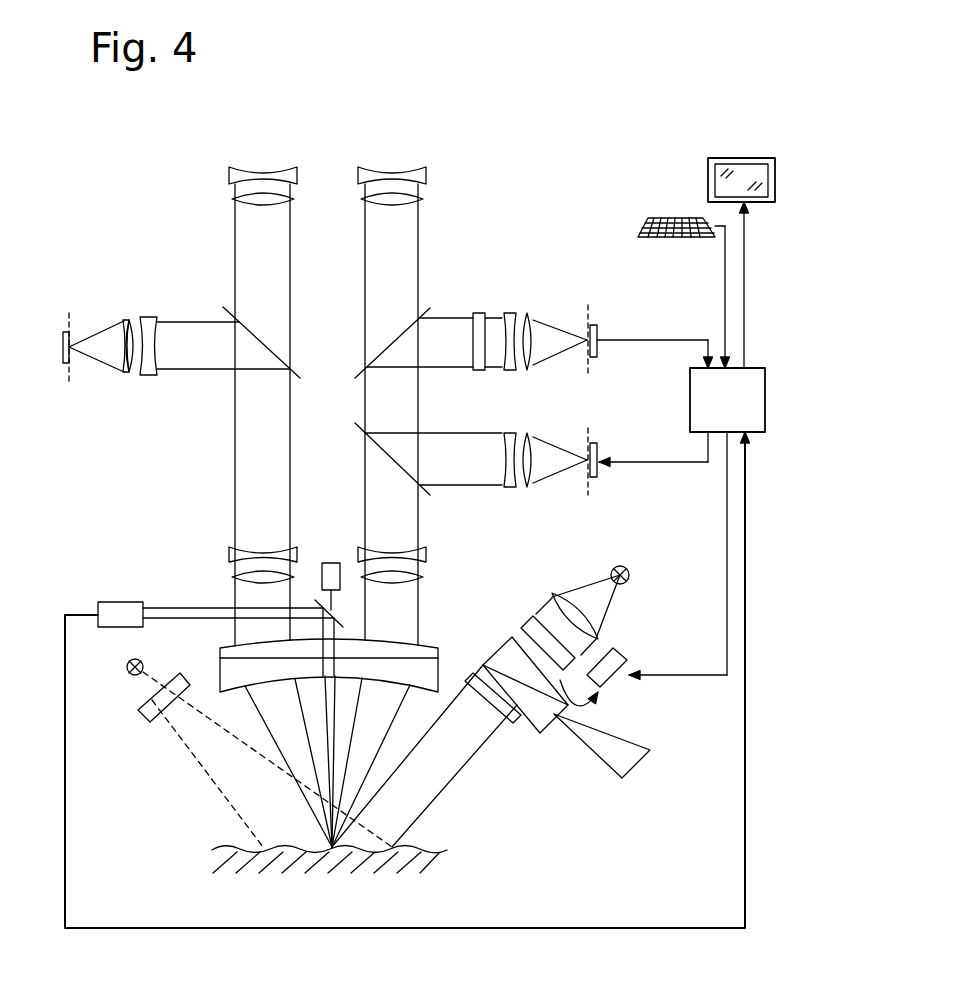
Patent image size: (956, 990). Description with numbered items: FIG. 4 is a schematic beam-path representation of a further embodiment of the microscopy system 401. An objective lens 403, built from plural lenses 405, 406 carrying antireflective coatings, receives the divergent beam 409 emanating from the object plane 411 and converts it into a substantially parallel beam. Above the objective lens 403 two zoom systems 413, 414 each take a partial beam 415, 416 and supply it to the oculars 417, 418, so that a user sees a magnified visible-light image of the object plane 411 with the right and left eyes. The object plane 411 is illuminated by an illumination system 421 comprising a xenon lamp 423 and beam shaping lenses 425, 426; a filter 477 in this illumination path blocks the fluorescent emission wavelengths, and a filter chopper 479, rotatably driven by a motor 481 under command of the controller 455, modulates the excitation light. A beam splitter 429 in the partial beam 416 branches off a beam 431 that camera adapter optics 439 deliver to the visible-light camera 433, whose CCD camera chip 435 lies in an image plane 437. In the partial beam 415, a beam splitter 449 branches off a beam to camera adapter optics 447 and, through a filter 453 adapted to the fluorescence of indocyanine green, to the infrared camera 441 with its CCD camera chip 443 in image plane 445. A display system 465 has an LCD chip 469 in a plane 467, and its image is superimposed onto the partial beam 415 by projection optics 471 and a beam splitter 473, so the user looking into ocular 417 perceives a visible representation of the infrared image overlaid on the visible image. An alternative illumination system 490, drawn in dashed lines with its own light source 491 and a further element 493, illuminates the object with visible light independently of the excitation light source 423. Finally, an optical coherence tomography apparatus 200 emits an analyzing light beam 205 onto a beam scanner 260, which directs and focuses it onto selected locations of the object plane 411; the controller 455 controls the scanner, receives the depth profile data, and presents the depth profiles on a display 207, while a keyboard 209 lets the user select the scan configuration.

The optical coherence tomography apparatus 200 is at (108, 602).
The analyzing light beam 205 is at (165, 608).
The display 207 is at (738, 158).
The keyboard 209 is at (673, 218).
The beam scanner 260 is at (331, 563).
The microscopy system 401 is at (548, 245).
The objective lens 403 is at (335, 642).
The lens 405 is at (335, 653).
The lens 406 is at (365, 653).
The divergent beam 409 is at (300, 787).
The object plane 411 is at (225, 847).
The zoom system 413 is at (431, 543).
The zoom system 414 is at (224, 543).
The partial beam 415 is at (418, 400).
The partial beam 416 is at (235, 472).
The ocular 417 is at (431, 163).
The ocular 418 is at (219, 163).
The illumination system 421 is at (522, 687).
The xenon lamp 423 is at (628, 569).
The beam shaping lens 425 is at (558, 595).
The beam shaping lens 426 is at (520, 707).
The beam splitter 429 is at (231, 307).
The beam 431 is at (258, 369).
The camera 433 is at (157, 286).
The CCD camera chip 435 is at (63, 347).
The image plane 437 is at (73, 375).
The camera adapter optics 439 is at (120, 316).
The camera 441 is at (510, 309).
The CCD camera chip 443 is at (600, 327).
The image plane 445 is at (598, 357).
The camera adapter optics 447 is at (500, 311).
The beam splitter 449 is at (425, 310).
The filter 453 is at (480, 312).
The controller 455 is at (714, 416).
The display system 465 is at (520, 461).
The plane 467 is at (590, 432).
The LCD chip 469 is at (598, 474).
The projection optics 471 is at (500, 431).
The beam splitter 473 is at (430, 492).
The filter 477 is at (522, 628).
The filter chopper 479 is at (637, 767).
The motor 481 is at (627, 653).
The alternative illumination system 490 is at (233, 739).
The light source 491 is at (128, 660).
The beam splitter 493 is at (143, 717).